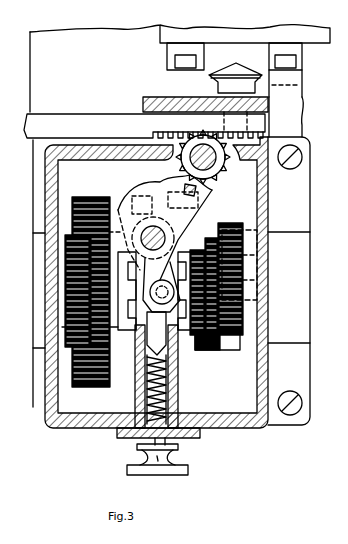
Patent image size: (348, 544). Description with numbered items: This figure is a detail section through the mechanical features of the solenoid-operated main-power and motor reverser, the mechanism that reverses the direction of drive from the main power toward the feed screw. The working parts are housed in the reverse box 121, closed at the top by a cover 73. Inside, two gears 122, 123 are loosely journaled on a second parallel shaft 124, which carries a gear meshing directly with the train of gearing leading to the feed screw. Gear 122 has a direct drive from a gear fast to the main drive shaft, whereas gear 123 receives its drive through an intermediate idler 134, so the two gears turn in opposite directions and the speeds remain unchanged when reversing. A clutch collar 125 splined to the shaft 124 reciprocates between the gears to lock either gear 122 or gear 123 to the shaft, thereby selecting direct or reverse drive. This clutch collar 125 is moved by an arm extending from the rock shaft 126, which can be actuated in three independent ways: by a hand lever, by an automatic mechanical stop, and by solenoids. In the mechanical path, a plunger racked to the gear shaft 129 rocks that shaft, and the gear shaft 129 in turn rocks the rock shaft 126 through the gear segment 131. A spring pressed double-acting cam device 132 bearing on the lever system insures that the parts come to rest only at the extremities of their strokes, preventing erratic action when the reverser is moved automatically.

The cover plate 73 is at (314, 33).
The reverse box 121 is at (270, 377).
The gear 122 is at (82, 197).
The gear 123 is at (198, 250).
The second parallel shaft 124 is at (130, 318).
The clutch collar 125 is at (140, 250).
The rock shaft 126 is at (166, 226).
The gear shaft 129 is at (222, 170).
The gear segment 131 is at (137, 181).
The spring pressed double-acting cam device 132 is at (160, 345).
The intermediate idler 134 is at (205, 350).